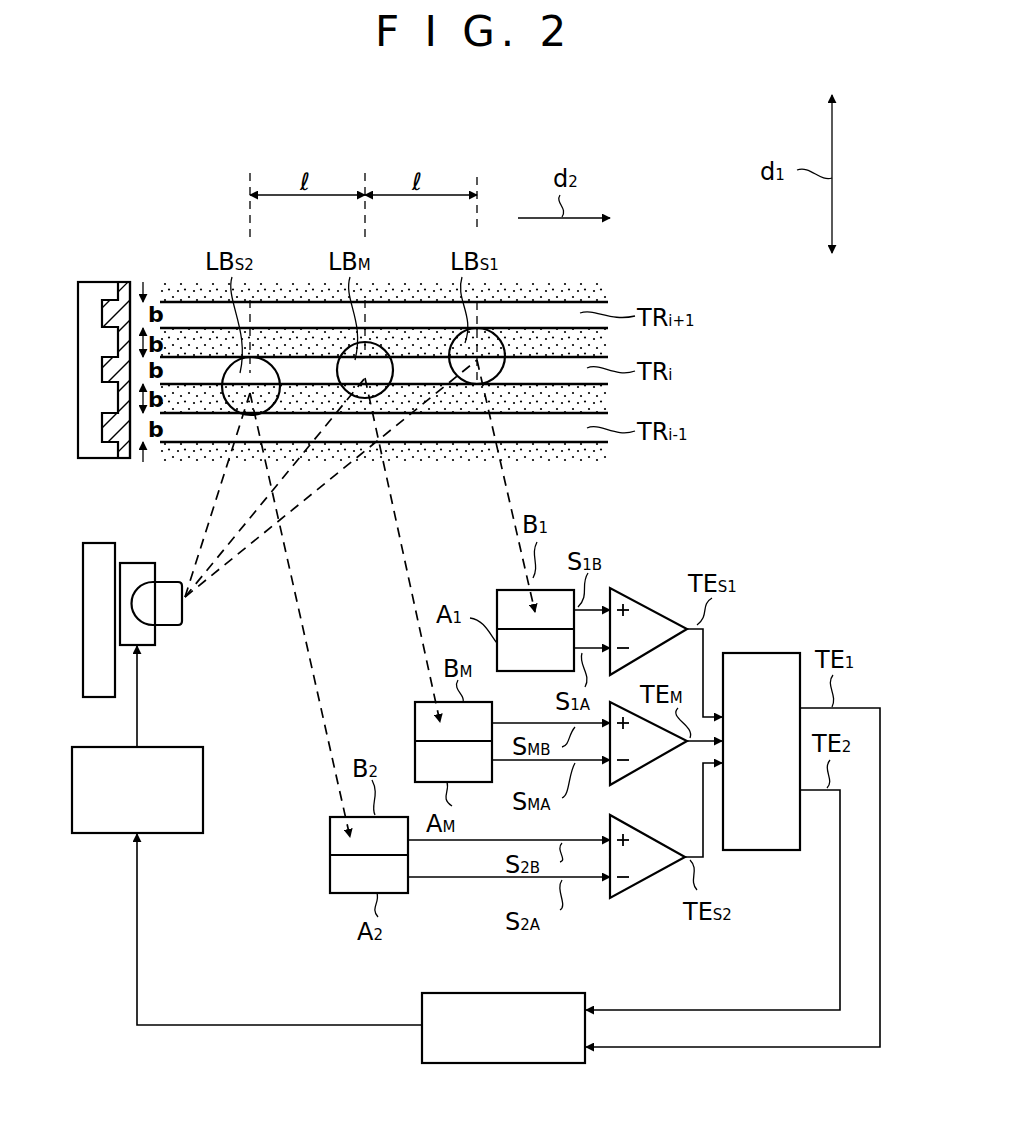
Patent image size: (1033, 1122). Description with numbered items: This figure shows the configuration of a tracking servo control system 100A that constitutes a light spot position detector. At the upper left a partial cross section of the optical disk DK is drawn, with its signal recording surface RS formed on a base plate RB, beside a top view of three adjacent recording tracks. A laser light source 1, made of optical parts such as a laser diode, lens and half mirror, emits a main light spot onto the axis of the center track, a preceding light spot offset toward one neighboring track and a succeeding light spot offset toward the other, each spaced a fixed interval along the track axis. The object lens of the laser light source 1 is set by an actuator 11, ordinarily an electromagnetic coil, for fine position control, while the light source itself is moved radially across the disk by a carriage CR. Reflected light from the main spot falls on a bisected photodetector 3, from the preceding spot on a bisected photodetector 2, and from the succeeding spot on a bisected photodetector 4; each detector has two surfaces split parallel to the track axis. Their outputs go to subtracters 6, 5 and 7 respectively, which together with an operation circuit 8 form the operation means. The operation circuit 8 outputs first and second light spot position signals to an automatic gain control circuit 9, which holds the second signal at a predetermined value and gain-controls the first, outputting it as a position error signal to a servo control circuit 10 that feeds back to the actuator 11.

The laser light source 1 is at (185, 607).
The bisected photodetector 2 is at (482, 595).
The bisected photodetector 3 is at (395, 718).
The bisected photodetector 4 is at (313, 848).
The subtracter 5 is at (640, 597).
The subtracter 6 is at (665, 753).
The subtracter 7 is at (633, 887).
The operation circuit 8 is at (777, 652).
The automatic gain control circuit 9 is at (453, 992).
The servo control circuit 10 is at (203, 763).
The actuator 11 is at (150, 646).
The tracking servo control system 100A is at (743, 487).
The carriage CR is at (100, 698).
The optical disk DK is at (90, 458).
The base plate RB is at (92, 283).
The signal recording surface RS is at (113, 283).